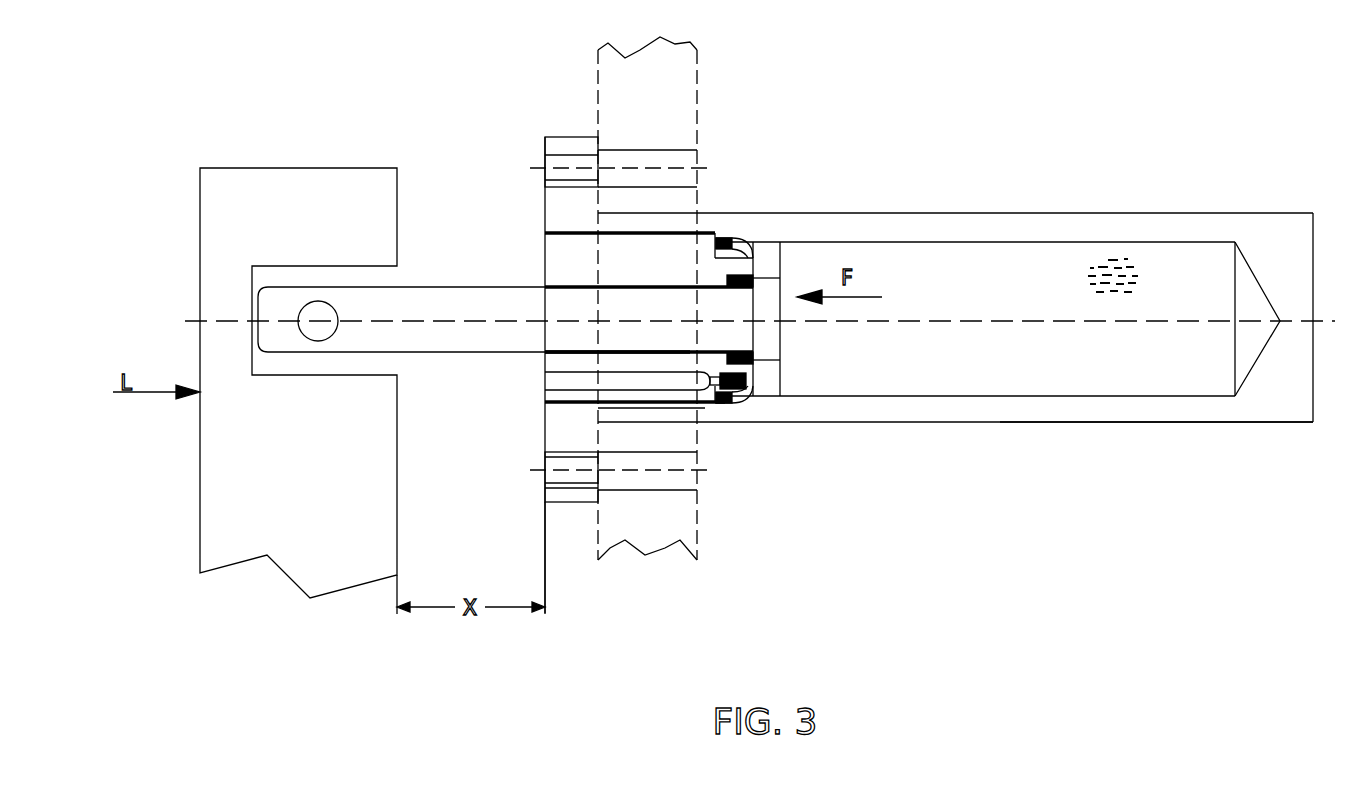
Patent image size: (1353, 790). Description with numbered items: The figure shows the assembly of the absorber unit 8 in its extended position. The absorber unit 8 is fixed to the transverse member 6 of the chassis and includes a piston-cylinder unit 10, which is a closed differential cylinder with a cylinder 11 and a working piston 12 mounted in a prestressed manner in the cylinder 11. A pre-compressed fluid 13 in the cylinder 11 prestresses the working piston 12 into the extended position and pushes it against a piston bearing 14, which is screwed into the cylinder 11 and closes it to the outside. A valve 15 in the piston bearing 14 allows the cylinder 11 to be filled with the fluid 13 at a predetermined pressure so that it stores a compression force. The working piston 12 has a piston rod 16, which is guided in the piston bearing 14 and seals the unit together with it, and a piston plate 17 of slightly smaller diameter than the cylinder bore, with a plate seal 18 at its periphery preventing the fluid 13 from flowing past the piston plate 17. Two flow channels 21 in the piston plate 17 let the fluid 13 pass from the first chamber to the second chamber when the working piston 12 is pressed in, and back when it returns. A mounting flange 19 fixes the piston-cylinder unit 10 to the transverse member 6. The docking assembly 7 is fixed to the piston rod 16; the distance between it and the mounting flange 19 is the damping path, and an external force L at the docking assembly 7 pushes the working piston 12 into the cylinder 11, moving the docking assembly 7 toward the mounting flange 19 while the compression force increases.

The transverse member 6 is at (682, 101).
The docking assembly 7 is at (243, 184).
The absorber unit 8 is at (901, 202).
The piston-cylinder unit 10 is at (858, 440).
The cylinder 11 is at (1052, 227).
The working piston 12 is at (492, 296).
The pre-compressed fluid 13 is at (1172, 253).
The piston bearing 14 is at (670, 253).
The valve 15 is at (712, 405).
The piston rod 16 is at (484, 355).
The piston plate 17 is at (770, 296).
The plate seal 18 is at (764, 405).
The mounting flange 19 is at (563, 146).
The flow channels 21 is at (787, 365).